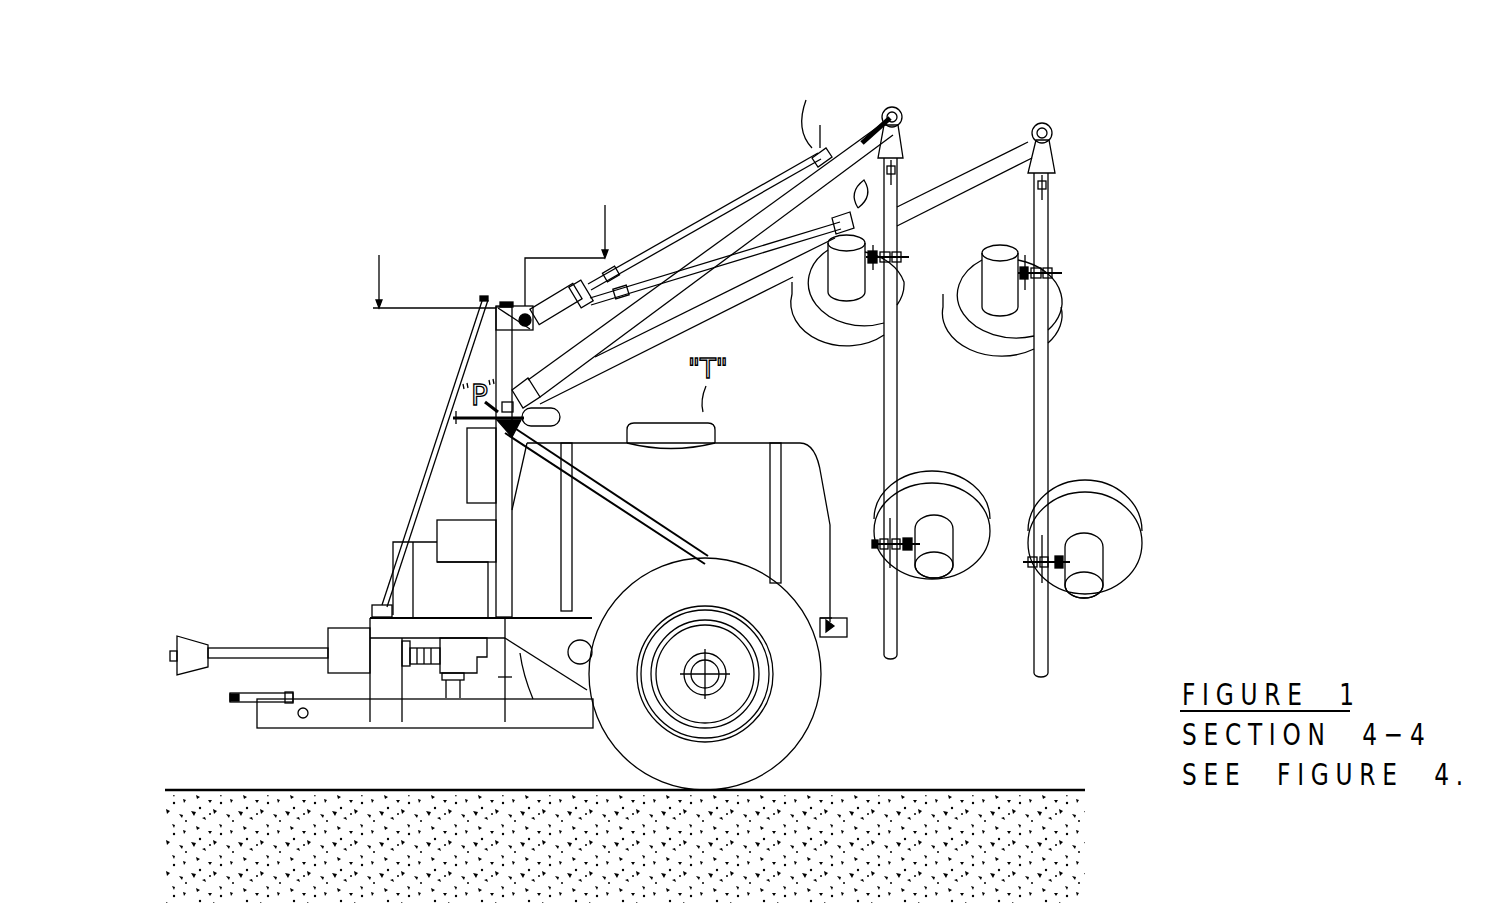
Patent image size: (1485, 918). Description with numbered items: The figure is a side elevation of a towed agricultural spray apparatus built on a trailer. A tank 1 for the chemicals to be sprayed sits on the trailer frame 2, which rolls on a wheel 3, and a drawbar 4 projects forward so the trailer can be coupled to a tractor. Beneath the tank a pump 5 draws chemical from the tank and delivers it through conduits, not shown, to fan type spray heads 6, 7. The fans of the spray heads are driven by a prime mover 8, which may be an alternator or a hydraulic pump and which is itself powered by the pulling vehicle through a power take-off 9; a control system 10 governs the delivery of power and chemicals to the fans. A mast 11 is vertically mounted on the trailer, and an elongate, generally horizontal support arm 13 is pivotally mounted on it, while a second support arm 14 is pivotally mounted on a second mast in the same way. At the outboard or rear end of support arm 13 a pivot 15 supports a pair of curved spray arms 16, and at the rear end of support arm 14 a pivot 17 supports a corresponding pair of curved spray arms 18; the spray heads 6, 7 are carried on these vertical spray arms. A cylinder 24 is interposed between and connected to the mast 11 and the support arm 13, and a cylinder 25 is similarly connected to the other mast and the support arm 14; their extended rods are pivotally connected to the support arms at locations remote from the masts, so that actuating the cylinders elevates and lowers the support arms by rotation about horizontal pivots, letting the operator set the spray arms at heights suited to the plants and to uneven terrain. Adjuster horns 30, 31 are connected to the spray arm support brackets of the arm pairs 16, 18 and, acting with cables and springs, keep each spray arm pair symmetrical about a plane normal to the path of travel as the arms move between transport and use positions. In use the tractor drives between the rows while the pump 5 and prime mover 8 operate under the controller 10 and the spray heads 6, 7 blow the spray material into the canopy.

The tank 1 is at (745, 480).
The frame 2 is at (580, 712).
The wheel 3 is at (793, 715).
The drawbar 4 is at (228, 697).
The pump 5 is at (460, 652).
The spray head 6 is at (1022, 313).
The spray head 7 is at (833, 303).
The prime mover 8 is at (427, 565).
The power take-off 9 is at (252, 655).
The control system 10 is at (478, 455).
The mast 11 is at (507, 490).
The support arm 13 is at (770, 213).
The support arm 14 is at (1005, 160).
The pivot 15 is at (892, 107).
The curved spray arms 16 is at (893, 352).
The pivot 17 is at (1044, 123).
The curved spray arms 18 is at (1042, 373).
The cylinder 24 is at (557, 303).
The cylinder 25 is at (572, 311).
The adjuster horn 30 is at (896, 145).
The adjuster horn 31 is at (1046, 160).